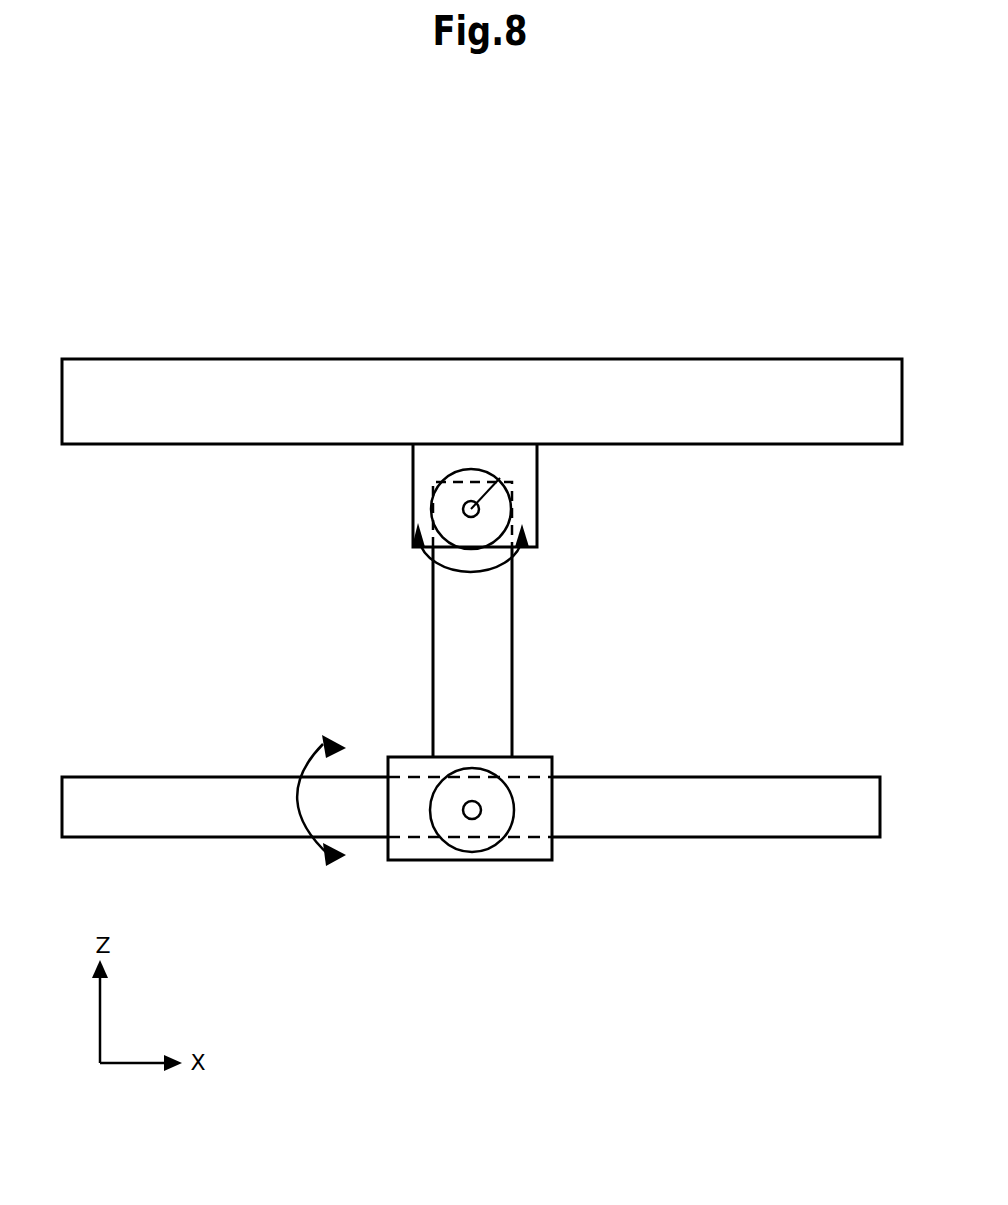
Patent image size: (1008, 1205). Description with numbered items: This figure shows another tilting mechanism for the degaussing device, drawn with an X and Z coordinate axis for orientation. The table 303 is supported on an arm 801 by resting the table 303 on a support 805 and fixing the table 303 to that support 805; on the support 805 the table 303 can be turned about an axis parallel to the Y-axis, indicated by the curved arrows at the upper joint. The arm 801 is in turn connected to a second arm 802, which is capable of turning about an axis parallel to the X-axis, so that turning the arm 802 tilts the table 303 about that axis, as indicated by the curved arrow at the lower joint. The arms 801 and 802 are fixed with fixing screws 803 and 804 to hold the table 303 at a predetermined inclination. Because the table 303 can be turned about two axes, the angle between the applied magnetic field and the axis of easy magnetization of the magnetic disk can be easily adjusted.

The table 303 is at (744, 380).
The arm 801 is at (490, 677).
The arm 802 is at (735, 782).
The fixing screw 803 is at (493, 531).
The fixing screw 804 is at (490, 782).
The support 805 is at (500, 478).